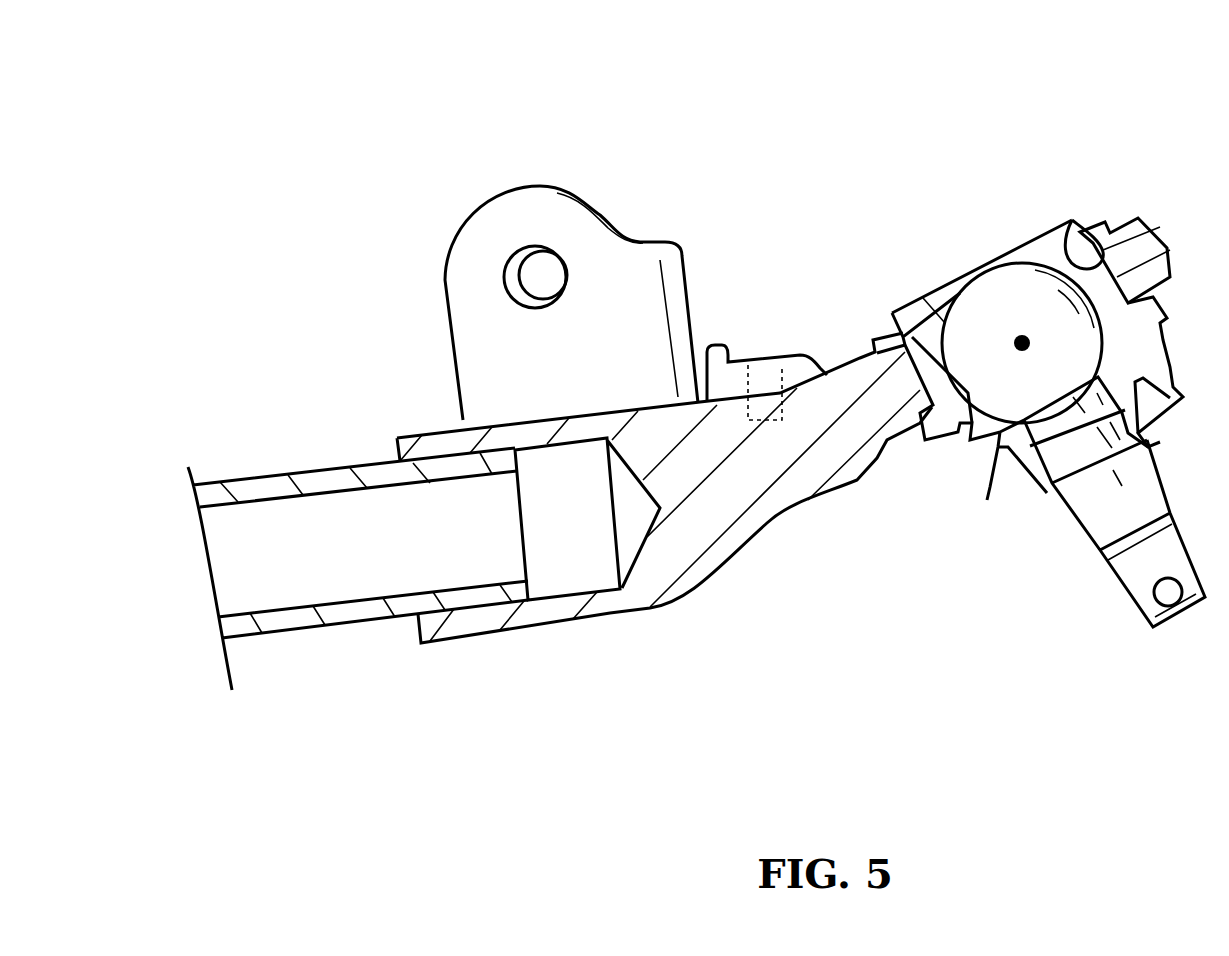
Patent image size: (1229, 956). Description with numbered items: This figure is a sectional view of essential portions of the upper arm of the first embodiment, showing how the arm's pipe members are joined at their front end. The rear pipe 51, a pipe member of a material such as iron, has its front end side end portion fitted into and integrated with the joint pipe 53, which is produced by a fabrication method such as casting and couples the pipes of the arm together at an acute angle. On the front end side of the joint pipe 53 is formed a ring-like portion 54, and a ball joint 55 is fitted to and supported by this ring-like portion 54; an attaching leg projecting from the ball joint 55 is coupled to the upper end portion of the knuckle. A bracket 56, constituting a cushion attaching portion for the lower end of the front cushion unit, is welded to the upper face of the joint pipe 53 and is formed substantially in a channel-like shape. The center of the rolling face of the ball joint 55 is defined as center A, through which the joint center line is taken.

The rear pipe 51 is at (248, 478).
The joint pipe 53 is at (752, 518).
The ring-like portion 54 is at (1072, 220).
The ball joint 55 is at (988, 278).
The bracket 56 is at (472, 215).
The center A is at (1022, 343).